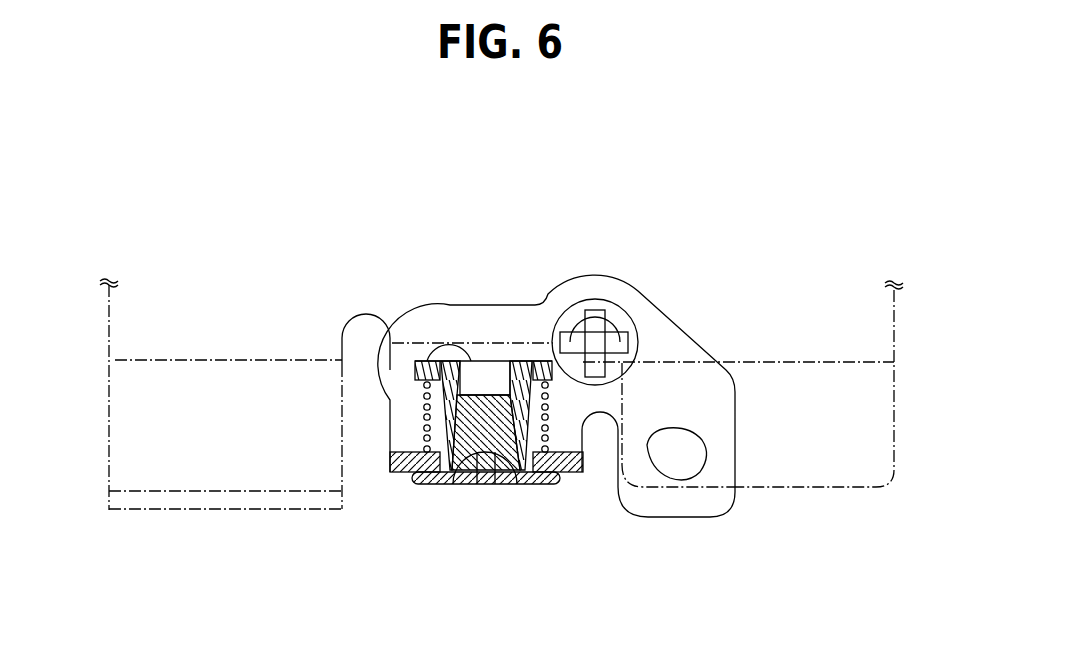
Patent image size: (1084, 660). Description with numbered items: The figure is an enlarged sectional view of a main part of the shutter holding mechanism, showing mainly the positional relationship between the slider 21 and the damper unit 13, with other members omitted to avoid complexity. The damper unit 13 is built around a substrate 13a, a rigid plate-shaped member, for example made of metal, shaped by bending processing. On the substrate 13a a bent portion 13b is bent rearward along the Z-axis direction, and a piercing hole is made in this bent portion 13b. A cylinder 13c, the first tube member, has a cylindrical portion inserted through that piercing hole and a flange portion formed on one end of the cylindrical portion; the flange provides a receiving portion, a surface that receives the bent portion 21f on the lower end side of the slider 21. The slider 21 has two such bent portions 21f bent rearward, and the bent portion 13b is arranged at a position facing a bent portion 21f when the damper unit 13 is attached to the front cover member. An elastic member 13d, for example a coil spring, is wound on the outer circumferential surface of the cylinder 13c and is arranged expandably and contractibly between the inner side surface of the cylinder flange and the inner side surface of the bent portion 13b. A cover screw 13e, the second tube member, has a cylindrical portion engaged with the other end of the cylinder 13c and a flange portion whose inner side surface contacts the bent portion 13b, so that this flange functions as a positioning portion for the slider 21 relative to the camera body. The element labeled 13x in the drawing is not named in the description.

The damper unit 13 is at (412, 262).
The substrate 13a is at (683, 335).
The bent portion 13b is at (570, 476).
The cylinder 13c is at (462, 481).
The elastic member 13d is at (543, 481).
The cover screw 13e is at (417, 483).
The cross-shaped boss 13x is at (615, 315).
The slider 21 is at (840, 487).
The bent portion 21f is at (500, 348).